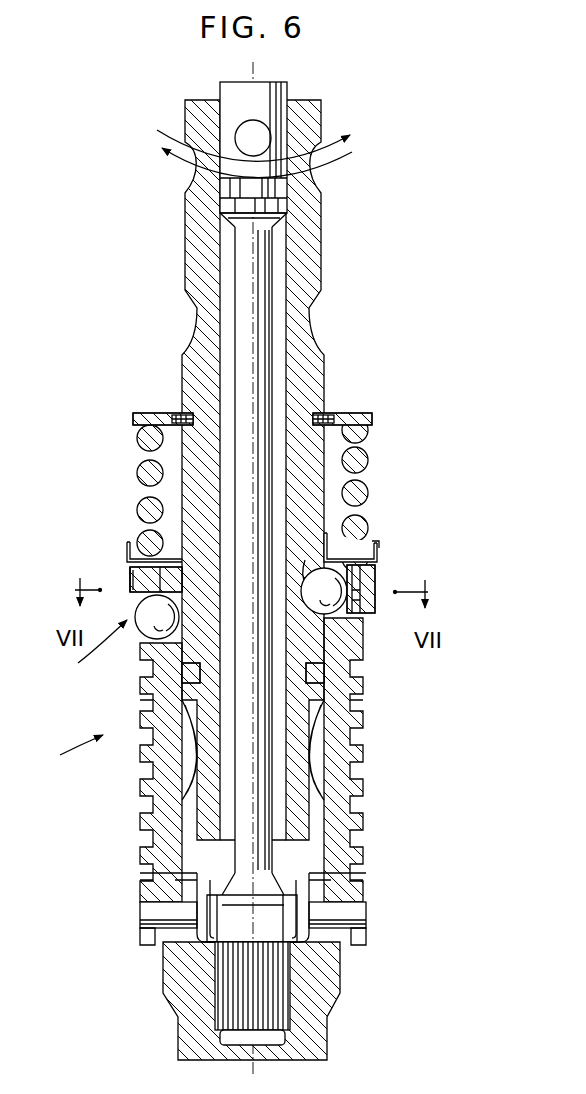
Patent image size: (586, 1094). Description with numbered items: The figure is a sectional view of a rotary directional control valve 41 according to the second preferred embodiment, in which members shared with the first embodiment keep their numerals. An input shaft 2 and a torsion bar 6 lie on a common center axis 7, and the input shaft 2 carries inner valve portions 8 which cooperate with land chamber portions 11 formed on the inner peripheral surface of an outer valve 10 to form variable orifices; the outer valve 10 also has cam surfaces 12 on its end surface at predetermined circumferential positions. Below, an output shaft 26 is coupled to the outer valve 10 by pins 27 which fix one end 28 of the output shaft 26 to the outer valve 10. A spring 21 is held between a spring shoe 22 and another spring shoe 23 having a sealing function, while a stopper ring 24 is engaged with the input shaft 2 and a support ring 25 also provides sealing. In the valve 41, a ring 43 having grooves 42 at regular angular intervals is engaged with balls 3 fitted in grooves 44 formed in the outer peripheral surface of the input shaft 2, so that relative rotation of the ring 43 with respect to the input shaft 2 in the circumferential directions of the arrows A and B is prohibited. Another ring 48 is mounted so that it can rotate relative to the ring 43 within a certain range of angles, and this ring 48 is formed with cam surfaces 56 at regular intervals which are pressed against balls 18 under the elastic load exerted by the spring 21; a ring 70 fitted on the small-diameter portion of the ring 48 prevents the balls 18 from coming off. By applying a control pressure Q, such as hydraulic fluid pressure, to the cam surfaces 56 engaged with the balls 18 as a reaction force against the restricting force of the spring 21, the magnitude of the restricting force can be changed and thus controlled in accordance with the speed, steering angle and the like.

The input shaft 2 is at (307, 343).
The balls 3 is at (342, 620).
The torsion bar 6 is at (262, 287).
The center axis 7 is at (264, 259).
The inner valve portions 8 is at (188, 743).
The outer valve 10 is at (345, 818).
The land chamber portions 11 is at (175, 752).
The cam surfaces 12 is at (142, 648).
The balls 18 is at (150, 618).
The spring 21 is at (366, 462).
The spring shoe 22 is at (360, 413).
The spring shoe 23 is at (372, 540).
The stopper ring 24 is at (330, 413).
The support ring 25 is at (378, 547).
The output shaft 26 is at (303, 1042).
The pins 27 is at (143, 910).
The one end of the output shaft 28 is at (303, 968).
The rotary directional control valve 41 is at (67, 755).
The grooves 42 is at (350, 582).
The ring 43 is at (374, 588).
The grooves 44 is at (304, 562).
The ring 48 is at (361, 596).
The cam surfaces 56 is at (140, 612).
The ring 70 is at (132, 600).
The arrow A is at (245, 134).
The arrow B is at (246, 158).
The control pressure Q is at (93, 650).